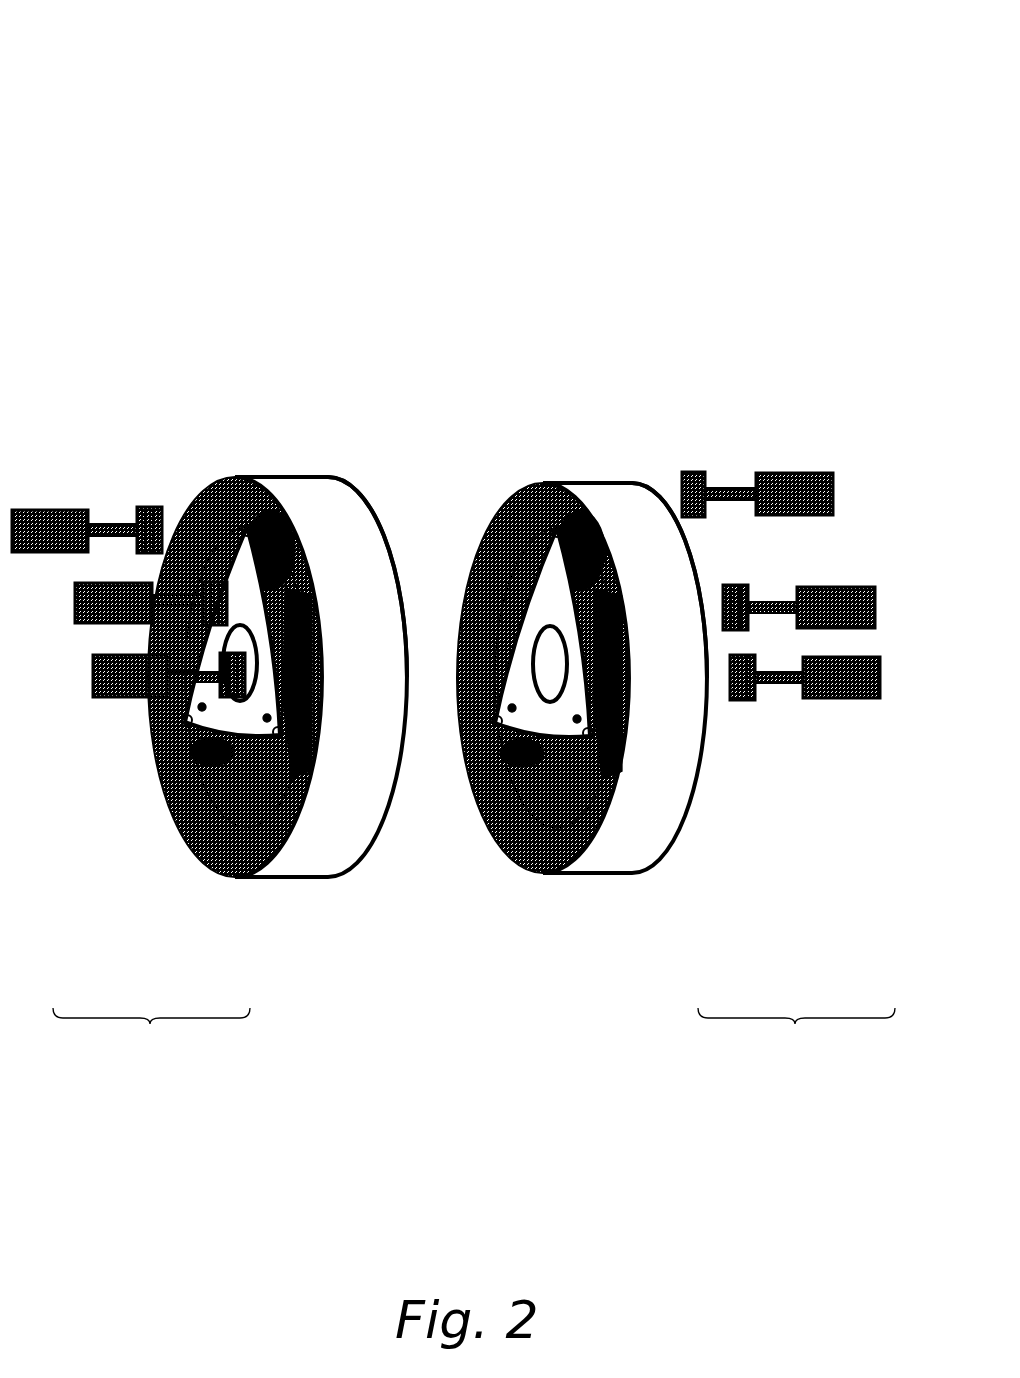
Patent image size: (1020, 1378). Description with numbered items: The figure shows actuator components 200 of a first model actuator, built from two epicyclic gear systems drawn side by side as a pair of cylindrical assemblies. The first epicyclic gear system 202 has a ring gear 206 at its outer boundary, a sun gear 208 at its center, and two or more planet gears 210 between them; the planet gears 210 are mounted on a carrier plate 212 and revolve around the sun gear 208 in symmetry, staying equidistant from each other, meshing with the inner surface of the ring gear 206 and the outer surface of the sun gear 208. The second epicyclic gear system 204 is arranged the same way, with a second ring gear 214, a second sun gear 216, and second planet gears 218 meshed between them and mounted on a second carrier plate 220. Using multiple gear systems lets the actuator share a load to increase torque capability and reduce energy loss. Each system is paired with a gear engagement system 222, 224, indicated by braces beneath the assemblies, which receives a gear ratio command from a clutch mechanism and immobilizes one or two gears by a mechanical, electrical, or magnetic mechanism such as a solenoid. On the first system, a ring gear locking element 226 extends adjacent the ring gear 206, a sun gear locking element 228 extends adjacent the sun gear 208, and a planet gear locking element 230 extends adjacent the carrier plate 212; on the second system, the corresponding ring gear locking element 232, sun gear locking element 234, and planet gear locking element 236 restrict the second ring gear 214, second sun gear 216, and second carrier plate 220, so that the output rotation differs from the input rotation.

The actuator components 200 is at (145, 67).
The first epicyclic gear system 202 is at (318, 442).
The second epicyclic gear system 204 is at (630, 440).
The ring gear 206 is at (293, 492).
The sun gear 208 is at (309, 690).
The planet gears 210 is at (250, 520).
The carrier plate 212 is at (232, 582).
The second ring gear 214 is at (610, 493).
The second sun gear 216 is at (619, 691).
The second planet gears 218 is at (555, 512).
The second carrier plate 220 is at (540, 585).
The gear engagement system 222 is at (150, 1024).
The gear engagement system 224 is at (795, 1024).
The ring gear locking element 226 is at (27, 510).
The sun gear locking element 228 is at (110, 698).
The planet gear locking element 230 is at (95, 622).
The ring gear locking element 232 is at (800, 485).
The sun gear locking element 234 is at (862, 698).
The planet gear locking element 236 is at (808, 590).